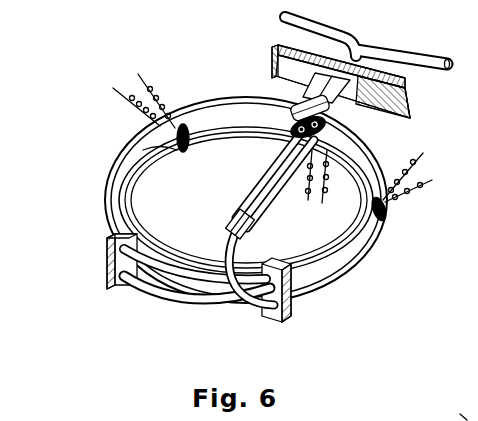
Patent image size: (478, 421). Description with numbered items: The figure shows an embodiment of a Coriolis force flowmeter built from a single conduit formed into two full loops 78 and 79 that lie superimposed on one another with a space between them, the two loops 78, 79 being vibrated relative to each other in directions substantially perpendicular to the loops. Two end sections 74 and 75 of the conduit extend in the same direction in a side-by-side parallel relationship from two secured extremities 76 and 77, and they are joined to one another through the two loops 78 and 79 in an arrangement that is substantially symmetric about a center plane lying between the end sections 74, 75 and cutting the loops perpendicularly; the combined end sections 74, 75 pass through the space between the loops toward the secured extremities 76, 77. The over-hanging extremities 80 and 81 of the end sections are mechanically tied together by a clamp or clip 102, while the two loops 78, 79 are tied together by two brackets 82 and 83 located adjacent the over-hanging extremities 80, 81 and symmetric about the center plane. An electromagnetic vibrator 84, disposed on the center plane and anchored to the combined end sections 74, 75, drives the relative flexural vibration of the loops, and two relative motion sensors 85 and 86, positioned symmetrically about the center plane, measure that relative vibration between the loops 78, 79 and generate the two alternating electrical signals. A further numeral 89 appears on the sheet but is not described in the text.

The end section of the conduit 74 is at (252, 178).
The end section of the conduit 75 is at (280, 193).
The secured extremity of the conduit 76 is at (280, 110).
The secured extremity of the conduit 77 is at (410, 100).
The 360 degree loop 78 is at (355, 234).
The 360 degree loop 79 is at (350, 270).
The over-hanging extremity of the end section 80 is at (175, 300).
The over-hanging extremity of the end section 81 is at (228, 262).
The bracket 82 is at (108, 248).
The bracket 83 is at (292, 316).
The electromagnetic vibrator 84 is at (293, 123).
The relative motion sensor 85 is at (143, 150).
The relative motion sensor 86 is at (387, 206).
The base 89 is at (452, 404).
The clamp or clip 102 is at (232, 222).